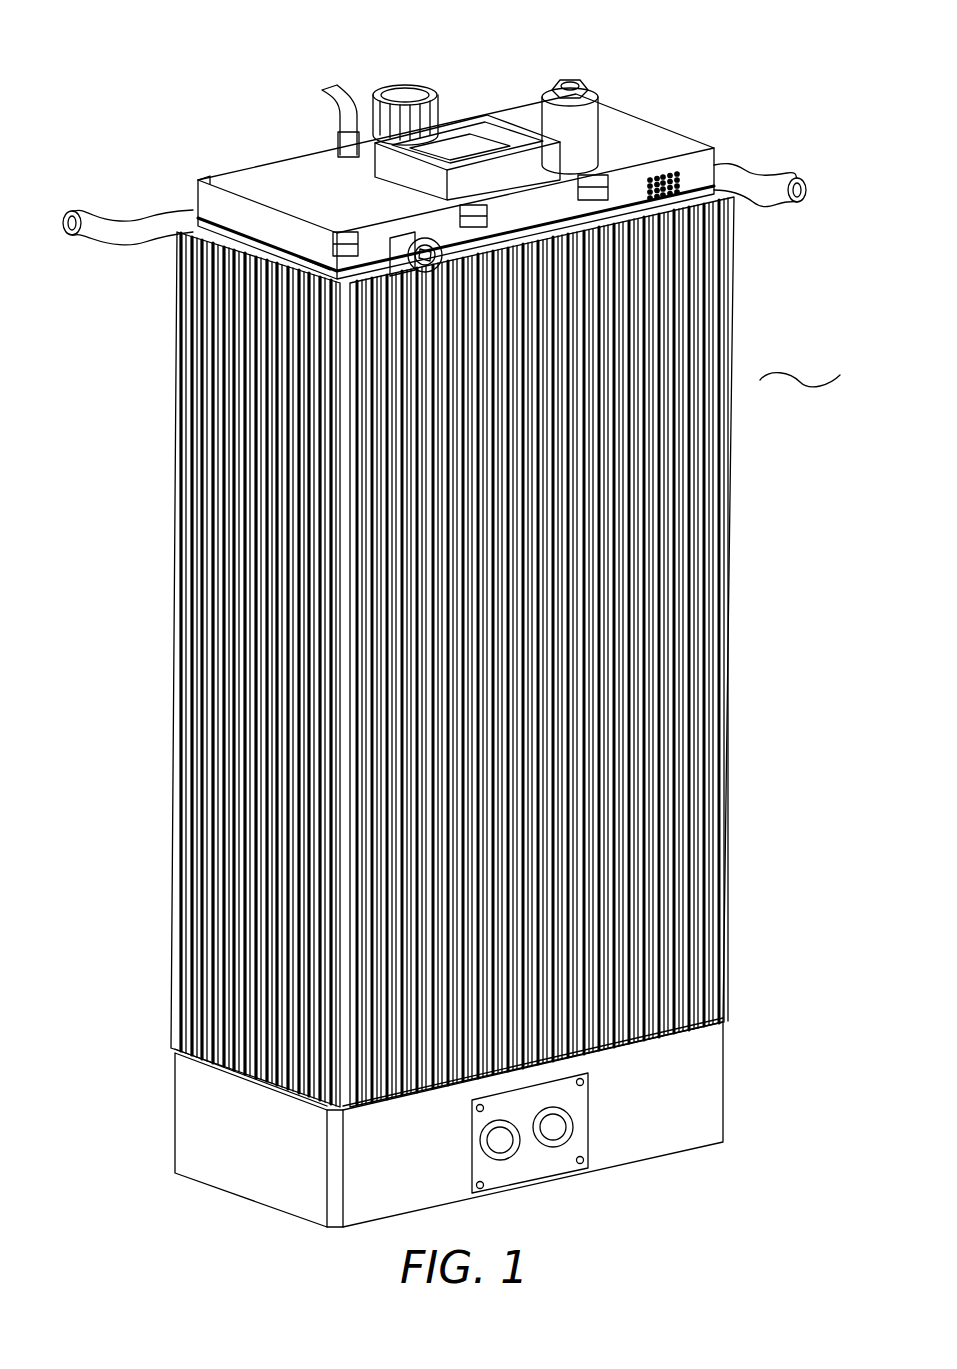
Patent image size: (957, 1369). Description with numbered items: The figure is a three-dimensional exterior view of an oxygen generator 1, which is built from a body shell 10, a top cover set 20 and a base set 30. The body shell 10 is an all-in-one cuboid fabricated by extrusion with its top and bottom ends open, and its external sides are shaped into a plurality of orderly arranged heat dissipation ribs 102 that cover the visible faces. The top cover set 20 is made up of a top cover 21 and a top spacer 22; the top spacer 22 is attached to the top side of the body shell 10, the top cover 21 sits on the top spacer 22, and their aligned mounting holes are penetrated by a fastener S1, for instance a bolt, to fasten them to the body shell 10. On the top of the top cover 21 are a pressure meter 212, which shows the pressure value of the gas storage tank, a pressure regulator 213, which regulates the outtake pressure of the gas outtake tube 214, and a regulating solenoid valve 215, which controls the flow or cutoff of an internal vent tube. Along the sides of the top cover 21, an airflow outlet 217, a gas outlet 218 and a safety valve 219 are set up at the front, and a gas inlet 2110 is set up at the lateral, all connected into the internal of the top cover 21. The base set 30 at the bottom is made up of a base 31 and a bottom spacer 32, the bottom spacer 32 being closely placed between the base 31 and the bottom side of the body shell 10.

The oxygen generator 1 is at (869, 387).
The body shell 10 is at (733, 487).
The heat dissipation ribs 102 is at (700, 550).
The top cover set 20 is at (474, 146).
The top cover 21 is at (669, 140).
The top spacer 22 is at (688, 200).
The gas inlet 2110 is at (186, 205).
The pressure meter 212 is at (478, 130).
The pressure regulator 213 is at (405, 86).
The gas outtake tube 214 is at (337, 142).
The regulating solenoid valve 215 is at (583, 128).
The airflow outlet 217 is at (735, 163).
The gas outlet 218 is at (657, 196).
The safety valve 219 is at (423, 270).
The base set 30 is at (529, 1105).
The base 31 is at (710, 1053).
The bottom spacer 32 is at (720, 1023).
The fastener S1 is at (315, 255).